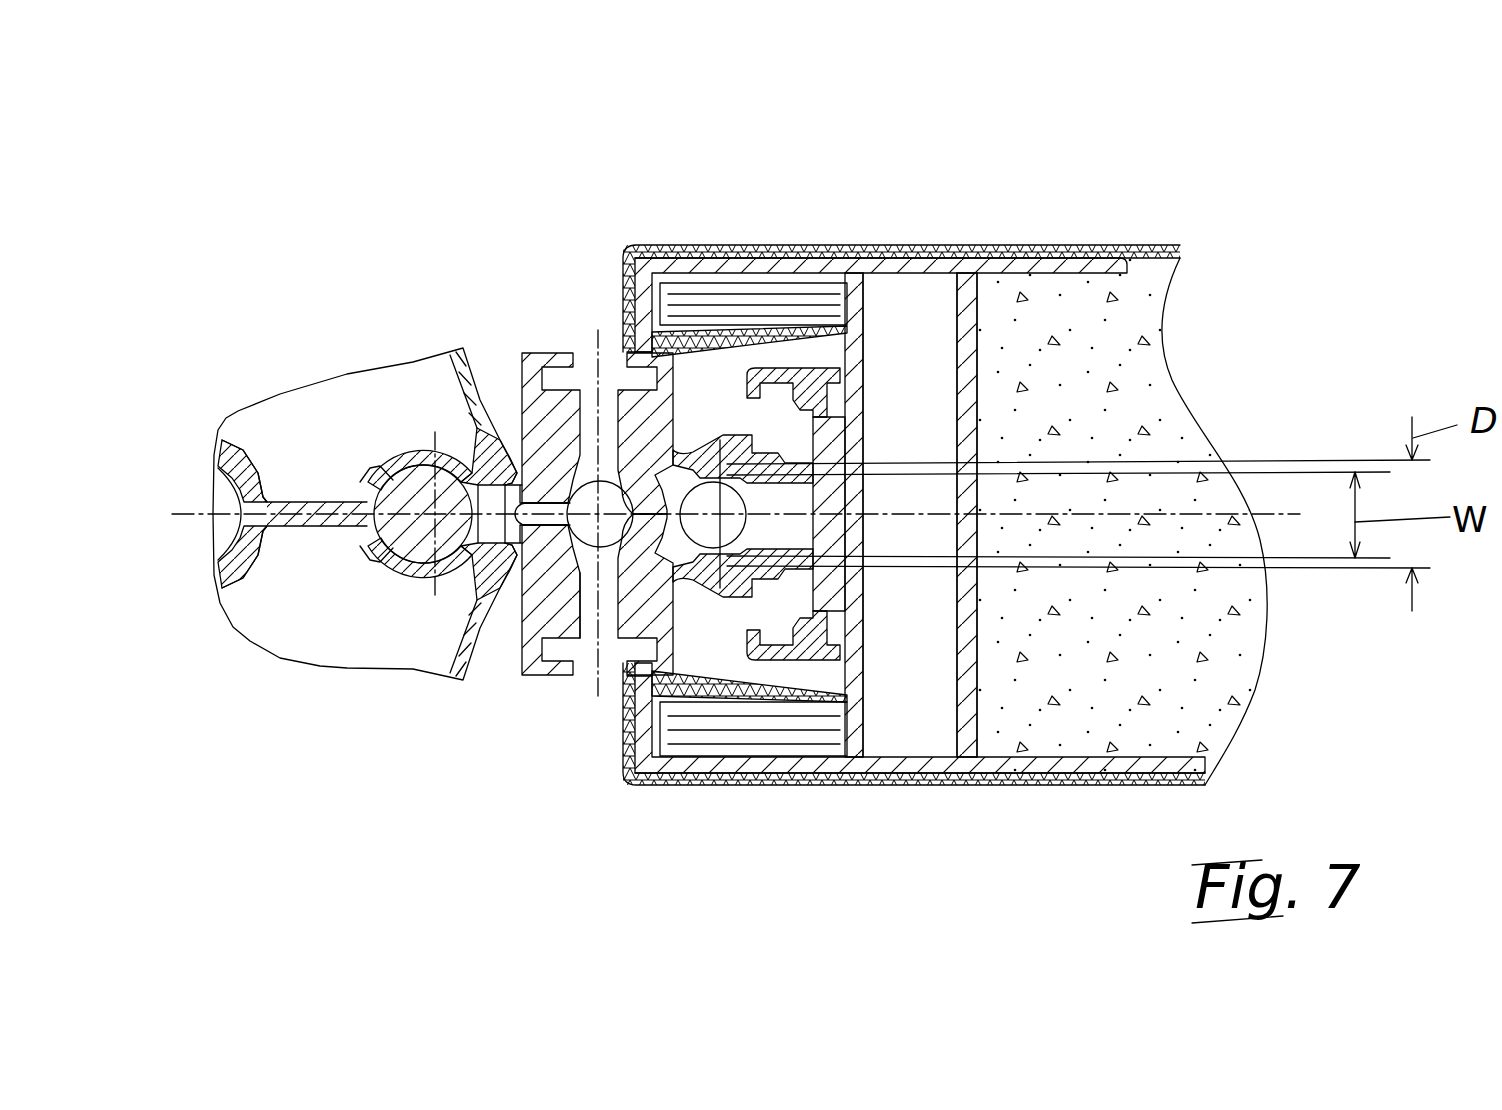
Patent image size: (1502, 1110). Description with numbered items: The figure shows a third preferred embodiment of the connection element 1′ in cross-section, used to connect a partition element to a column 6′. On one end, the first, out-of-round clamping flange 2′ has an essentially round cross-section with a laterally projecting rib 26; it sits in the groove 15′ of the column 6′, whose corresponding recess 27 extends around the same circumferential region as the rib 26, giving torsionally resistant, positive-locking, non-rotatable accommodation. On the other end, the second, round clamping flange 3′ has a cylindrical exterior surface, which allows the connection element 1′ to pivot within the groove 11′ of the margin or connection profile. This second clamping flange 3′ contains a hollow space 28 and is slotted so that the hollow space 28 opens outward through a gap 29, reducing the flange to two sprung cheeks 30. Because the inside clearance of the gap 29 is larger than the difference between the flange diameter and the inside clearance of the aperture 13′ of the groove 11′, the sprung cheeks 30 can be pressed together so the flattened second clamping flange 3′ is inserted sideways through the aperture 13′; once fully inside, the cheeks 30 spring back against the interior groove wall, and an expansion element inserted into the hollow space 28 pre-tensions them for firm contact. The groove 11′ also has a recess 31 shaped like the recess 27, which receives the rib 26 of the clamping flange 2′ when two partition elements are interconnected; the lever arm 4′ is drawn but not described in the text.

The connection element 1′ is at (533, 452).
The first clamping flange 2′ is at (410, 453).
The second clamping flange 3′ is at (608, 440).
The lever arm 4′ is at (492, 560).
The column 6′ is at (447, 304).
The groove 11′ is at (582, 600).
The aperture 13′ is at (552, 548).
The groove 15′ is at (422, 570).
The rib 26 is at (372, 492).
The recess 27 is at (368, 543).
The hollow space 28 is at (608, 532).
The gap 29 is at (640, 485).
The sprung cheeks 30 is at (611, 436).
The recess 31 is at (680, 362).